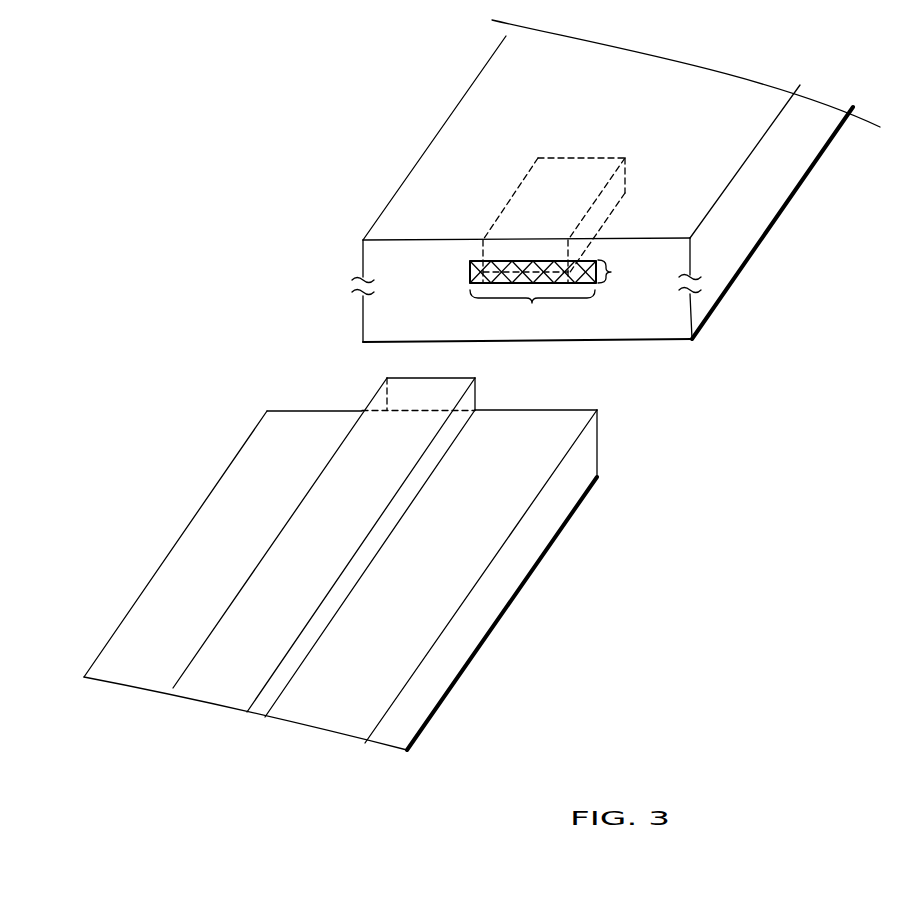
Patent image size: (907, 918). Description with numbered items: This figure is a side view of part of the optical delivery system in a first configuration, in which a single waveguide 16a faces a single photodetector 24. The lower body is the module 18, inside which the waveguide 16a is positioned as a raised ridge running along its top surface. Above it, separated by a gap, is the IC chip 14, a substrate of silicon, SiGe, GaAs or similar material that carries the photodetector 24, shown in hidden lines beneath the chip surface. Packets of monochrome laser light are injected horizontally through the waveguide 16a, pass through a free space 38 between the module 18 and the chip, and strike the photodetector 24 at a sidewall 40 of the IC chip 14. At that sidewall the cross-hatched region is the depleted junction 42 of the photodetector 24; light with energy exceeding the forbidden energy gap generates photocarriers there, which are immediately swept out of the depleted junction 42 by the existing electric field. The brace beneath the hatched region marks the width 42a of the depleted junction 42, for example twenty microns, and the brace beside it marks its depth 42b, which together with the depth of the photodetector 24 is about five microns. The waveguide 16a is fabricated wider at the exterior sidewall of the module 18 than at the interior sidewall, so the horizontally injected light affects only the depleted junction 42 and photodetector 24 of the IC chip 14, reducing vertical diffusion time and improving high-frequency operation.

The IC chip 14 is at (513, 77).
The photodetector 24 is at (587, 163).
The sidewall 40 is at (285, 204).
The depleted junction 42 is at (472, 281).
The width of depleted junction 42a is at (532, 311).
The depth of depleted junction 42b is at (625, 271).
The free space 38 is at (345, 338).
The module 18 is at (558, 430).
The waveguide 16a is at (305, 516).